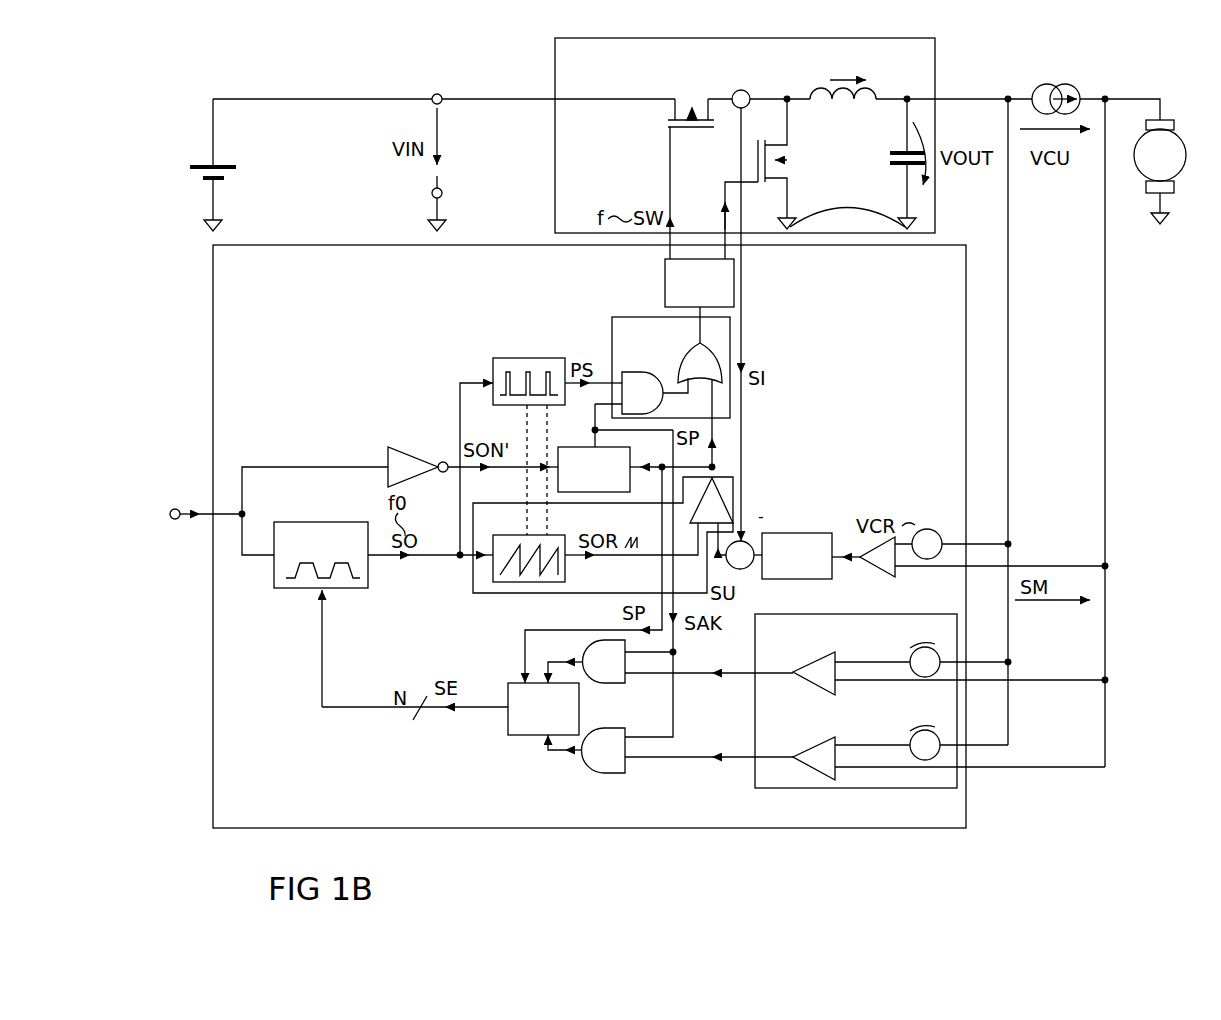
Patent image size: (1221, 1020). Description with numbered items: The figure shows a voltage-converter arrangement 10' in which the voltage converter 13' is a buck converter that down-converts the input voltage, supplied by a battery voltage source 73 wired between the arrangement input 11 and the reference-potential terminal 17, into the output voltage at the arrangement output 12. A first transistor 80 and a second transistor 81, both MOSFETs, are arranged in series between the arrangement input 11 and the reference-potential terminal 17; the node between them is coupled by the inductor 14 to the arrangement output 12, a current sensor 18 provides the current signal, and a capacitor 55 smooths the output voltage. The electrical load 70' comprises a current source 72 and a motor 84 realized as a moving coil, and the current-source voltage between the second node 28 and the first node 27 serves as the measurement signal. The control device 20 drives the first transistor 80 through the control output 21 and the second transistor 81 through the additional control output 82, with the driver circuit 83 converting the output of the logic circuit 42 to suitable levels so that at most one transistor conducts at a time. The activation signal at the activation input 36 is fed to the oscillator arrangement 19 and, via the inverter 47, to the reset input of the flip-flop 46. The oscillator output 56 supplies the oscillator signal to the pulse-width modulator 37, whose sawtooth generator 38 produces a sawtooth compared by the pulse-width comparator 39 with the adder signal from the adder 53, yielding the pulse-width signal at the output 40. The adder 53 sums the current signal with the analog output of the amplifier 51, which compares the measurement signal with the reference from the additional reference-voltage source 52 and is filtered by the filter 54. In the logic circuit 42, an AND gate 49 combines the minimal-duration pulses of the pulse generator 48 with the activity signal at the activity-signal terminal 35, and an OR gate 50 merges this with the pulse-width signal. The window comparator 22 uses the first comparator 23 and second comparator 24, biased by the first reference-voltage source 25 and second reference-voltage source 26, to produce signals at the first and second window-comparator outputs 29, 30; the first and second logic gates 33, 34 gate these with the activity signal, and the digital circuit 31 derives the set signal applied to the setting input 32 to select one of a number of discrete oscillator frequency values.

The voltage source 73 is at (210, 160).
The reference-potential terminal 17 is at (214, 223).
The arrangement input 11 is at (440, 104).
The voltage-converter arrangement 10' is at (589, 511).
The voltage converter 13' is at (723, 135).
The first transistor 80 is at (700, 128).
The second transistor 81 is at (758, 162).
The current sensor 18 is at (749, 93).
The additional control output 82 is at (742, 248).
The inductor 14 is at (843, 104).
The arrangement output 12 is at (907, 99).
The capacitor 55 is at (890, 163).
The current source 72 is at (1068, 84).
The electrical load 70' is at (1160, 132).
The motor 84 is at (1182, 172).
The control device 20 is at (213, 300).
The control output 21 is at (670, 258).
The driver circuit 83 is at (665, 292).
The logic circuit 42 is at (612, 322).
The logic gate 49 is at (630, 372).
The additional logic gate 50 is at (678, 375).
The pulse generator 48 is at (500, 358).
The flip-flop 46 is at (574, 447).
The inverter 47 is at (432, 452).
The activation input 36 is at (207, 518).
The oscillator arrangement 19 is at (274, 572).
The oscillator output 56 is at (368, 560).
The setting input 32 is at (318, 600).
The pulse-width modulator 37 is at (503, 593).
The sawtooth generator 38 is at (565, 577).
The output of the pulse-width modulator 40 is at (733, 480).
The pulse-width comparator 39 is at (690, 512).
The adder 53 is at (749, 566).
The filter 54 is at (781, 533).
The amplifier 51 is at (862, 540).
The additional reference-voltage source 52 is at (935, 531).
The activity-signal terminal 35 is at (675, 650).
The digital circuit 31 is at (512, 735).
The second logic gate 34 is at (598, 684).
The first logic gate 33 is at (615, 730).
The second window-comparator output 30 is at (752, 672).
The first window-comparator output 29 is at (752, 757).
The window comparator 22 is at (957, 776).
The second comparator 24 is at (826, 654).
The first comparator 23 is at (826, 739).
The second reference-voltage source 26 is at (910, 658).
The first reference-voltage source 25 is at (910, 741).
The second node 28 is at (1010, 660).
The first node 27 is at (1107, 679).